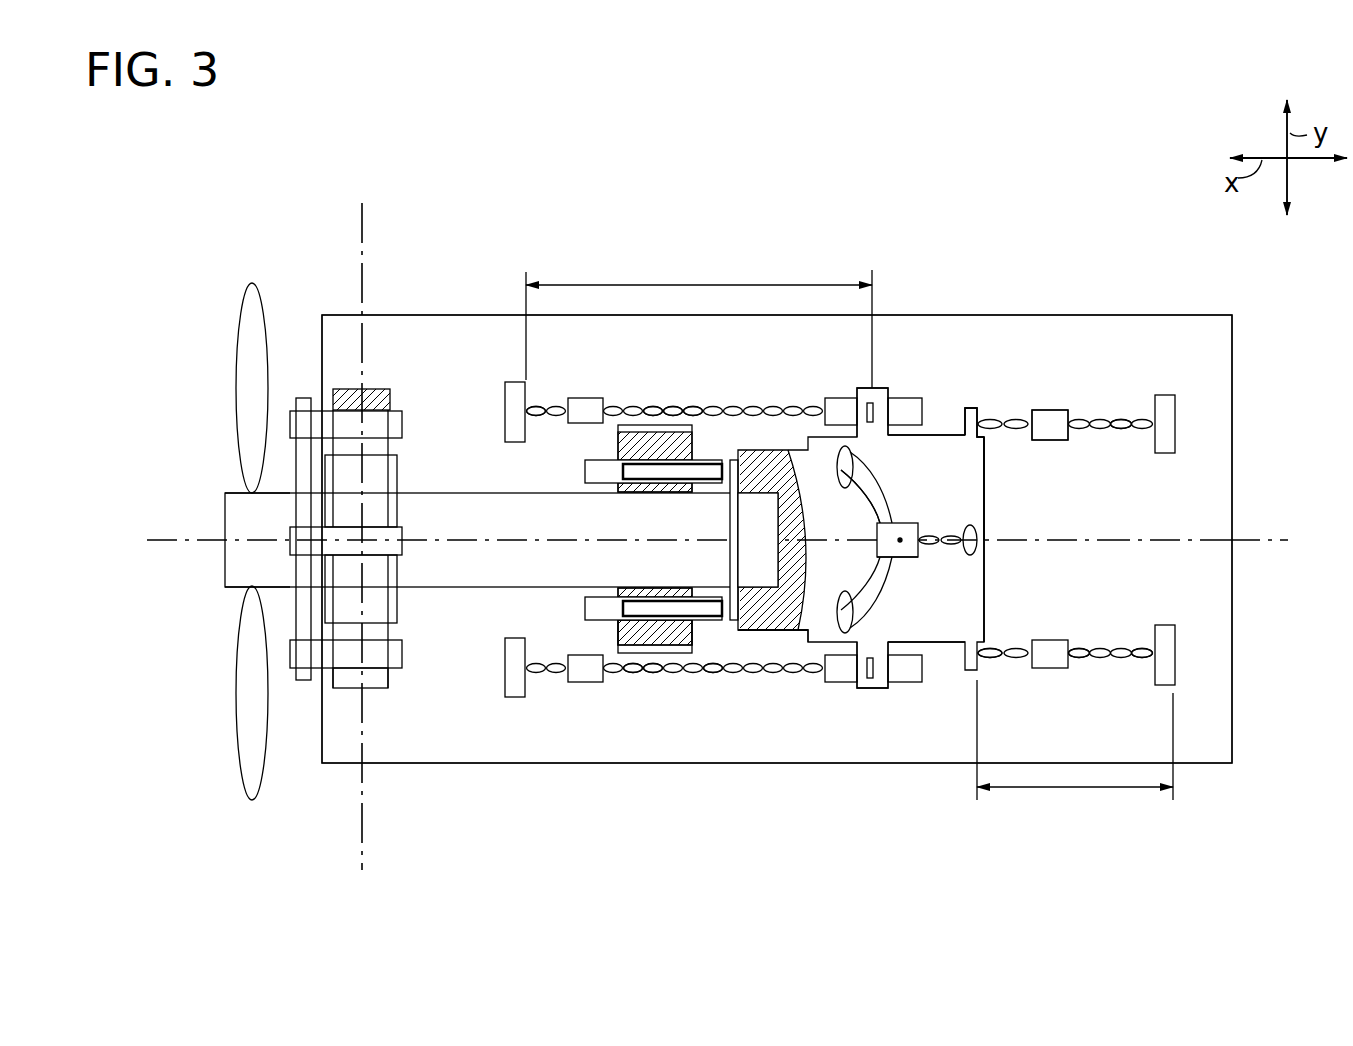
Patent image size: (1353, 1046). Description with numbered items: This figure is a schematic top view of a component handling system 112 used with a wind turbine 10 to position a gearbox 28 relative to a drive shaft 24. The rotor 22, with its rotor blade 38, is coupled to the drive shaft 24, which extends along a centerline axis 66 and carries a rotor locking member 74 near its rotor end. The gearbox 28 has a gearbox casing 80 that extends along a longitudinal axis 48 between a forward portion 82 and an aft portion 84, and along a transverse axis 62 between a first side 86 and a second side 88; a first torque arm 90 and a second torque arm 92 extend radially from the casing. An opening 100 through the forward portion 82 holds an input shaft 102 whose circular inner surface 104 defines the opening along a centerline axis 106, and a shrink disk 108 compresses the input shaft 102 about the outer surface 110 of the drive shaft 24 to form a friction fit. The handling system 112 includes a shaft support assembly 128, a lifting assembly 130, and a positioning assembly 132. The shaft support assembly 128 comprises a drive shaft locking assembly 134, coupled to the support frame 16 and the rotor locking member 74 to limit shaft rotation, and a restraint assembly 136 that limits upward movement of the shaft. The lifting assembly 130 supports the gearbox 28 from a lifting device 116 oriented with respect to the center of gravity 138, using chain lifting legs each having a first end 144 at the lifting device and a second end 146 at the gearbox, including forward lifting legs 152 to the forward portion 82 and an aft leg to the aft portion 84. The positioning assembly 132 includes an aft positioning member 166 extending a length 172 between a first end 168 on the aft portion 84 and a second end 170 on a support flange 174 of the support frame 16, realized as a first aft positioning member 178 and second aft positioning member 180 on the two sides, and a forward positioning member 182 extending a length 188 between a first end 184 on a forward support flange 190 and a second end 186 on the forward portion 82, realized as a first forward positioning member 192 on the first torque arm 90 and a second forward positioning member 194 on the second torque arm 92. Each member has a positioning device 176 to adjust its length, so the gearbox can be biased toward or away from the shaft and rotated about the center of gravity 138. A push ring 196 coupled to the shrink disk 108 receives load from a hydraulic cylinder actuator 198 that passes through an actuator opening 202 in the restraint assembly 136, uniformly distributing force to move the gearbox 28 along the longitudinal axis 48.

The wind turbine 10 is at (720, 180).
The support frame 16 is at (543, 750).
The rotor 22 is at (205, 475).
The drive shaft 24 is at (430, 493).
The gearbox 28 is at (955, 435).
The rotor blade 38 is at (252, 283).
The longitudinal axis 48 is at (1267, 540).
The transverse axis 62 is at (362, 228).
The centerline axis 66 is at (160, 540).
The rotor locking member 74 is at (303, 398).
The gearbox casing 80 is at (940, 435).
The forward portion 82 is at (815, 640).
The aft portion 84 is at (985, 580).
The first side 86 is at (940, 642).
The second side 88 is at (983, 450).
The first torque arm 90 is at (873, 690).
The second torque arm 92 is at (878, 385).
The opening 100 is at (765, 554).
The input shaft 102 is at (765, 580).
The inner surface 104 is at (757, 497).
The centerline axis 106 is at (1105, 540).
The shrink disk 108 is at (733, 625).
The outer surface 110 is at (520, 492).
The component handling system 112 is at (835, 245).
The lifting device 116 is at (903, 560).
The shaft support assembly 128 is at (447, 352).
The lifting assembly 130 is at (985, 500).
The positioning assembly 132 is at (1055, 375).
The drive shaft locking assembly 134 is at (380, 378).
The restraint assembly 136 is at (650, 645).
The center of gravity 138 is at (900, 523).
The first end 144 is at (875, 515).
The second end 146 is at (855, 455).
The forward lifting leg 152 is at (855, 498).
The aft positioning member 166 is at (1105, 420).
The first end 168 is at (993, 653).
The second end 170 is at (1145, 653).
The length 172 is at (1058, 790).
The support flange 174 is at (1168, 640).
The positioning device 176 is at (590, 398).
The first aft positioning member 178 is at (1072, 653).
The second aft positioning member 180 is at (1120, 424).
The forward positioning member 182 is at (700, 410).
The first end 184 is at (530, 405).
The second end 186 is at (842, 398).
The length 188 is at (600, 285).
The forward support flange 190 is at (505, 402).
The first forward positioning member 192 is at (638, 672).
The second forward positioning member 194 is at (665, 410).
The push ring 196 is at (690, 465).
The hydraulic cylinder actuator 198 is at (590, 470).
The actuator opening 202 is at (608, 630).